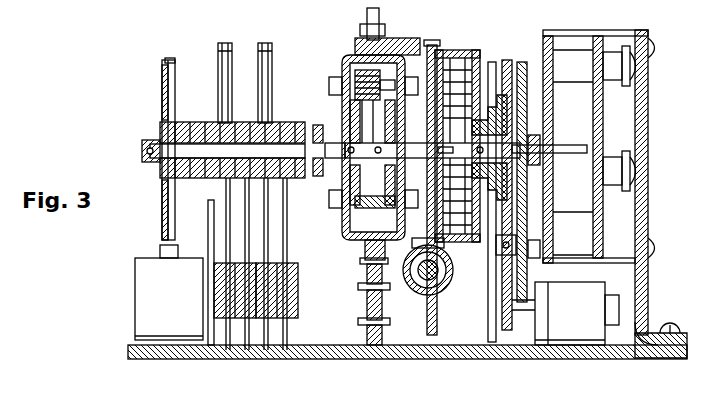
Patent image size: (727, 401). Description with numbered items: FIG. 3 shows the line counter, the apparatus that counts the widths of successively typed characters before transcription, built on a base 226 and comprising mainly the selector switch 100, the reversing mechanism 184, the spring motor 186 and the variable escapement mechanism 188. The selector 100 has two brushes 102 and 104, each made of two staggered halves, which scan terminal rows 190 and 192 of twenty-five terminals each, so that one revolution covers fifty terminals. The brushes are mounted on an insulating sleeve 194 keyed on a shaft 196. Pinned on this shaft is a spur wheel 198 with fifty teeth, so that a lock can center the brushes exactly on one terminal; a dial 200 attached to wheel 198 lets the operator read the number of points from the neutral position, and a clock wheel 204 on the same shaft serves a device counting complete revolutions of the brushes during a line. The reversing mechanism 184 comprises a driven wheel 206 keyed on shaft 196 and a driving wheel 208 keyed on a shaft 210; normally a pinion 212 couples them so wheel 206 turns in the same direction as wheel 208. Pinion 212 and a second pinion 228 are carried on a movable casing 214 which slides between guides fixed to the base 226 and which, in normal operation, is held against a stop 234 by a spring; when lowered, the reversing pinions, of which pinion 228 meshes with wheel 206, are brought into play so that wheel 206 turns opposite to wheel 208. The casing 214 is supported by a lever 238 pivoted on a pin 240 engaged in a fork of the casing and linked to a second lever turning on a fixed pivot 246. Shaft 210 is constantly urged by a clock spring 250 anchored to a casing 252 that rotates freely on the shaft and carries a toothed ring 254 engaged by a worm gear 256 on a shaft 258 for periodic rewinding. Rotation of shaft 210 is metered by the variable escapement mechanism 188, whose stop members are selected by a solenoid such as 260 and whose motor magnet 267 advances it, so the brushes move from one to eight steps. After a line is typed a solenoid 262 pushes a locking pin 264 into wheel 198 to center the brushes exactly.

The selector switch 100 is at (249, 36).
The brush 102 is at (222, 42).
The brush 104 is at (265, 44).
The reversing mechanism 184 is at (362, 19).
The spring motor 186 is at (473, 127).
The variable escapement mechanism 188 is at (600, 175).
The terminal row 190 is at (228, 352).
The terminal row 192 is at (266, 352).
The insulating sleeve 194 is at (307, 146).
The shaft 196 is at (330, 158).
The spur wheel 198 is at (168, 58).
The dial 200 is at (163, 222).
The clock wheel 204 is at (160, 130).
The driven wheel 206 is at (347, 114).
The driving wheel 208 is at (346, 207).
The shaft 210 is at (432, 151).
The pinion 212 is at (364, 250).
The movable casing 214 is at (356, 233).
The base 226 is at (528, 345).
The pinion 228 is at (345, 68).
The stop 234 is at (357, 52).
The lever 238 is at (366, 290).
The pin 240 is at (367, 270).
The fixed pivot 246 is at (364, 329).
The clock spring 250 is at (466, 84).
The casing 252 is at (473, 138).
The toothed ring 254 is at (432, 42).
The worm gear 256 is at (450, 330).
The shaft 258 is at (450, 295).
The solenoid 260 is at (601, 67).
The solenoid 262 is at (190, 310).
The locking pin 264 is at (160, 249).
The motor magnet 267 is at (592, 315).